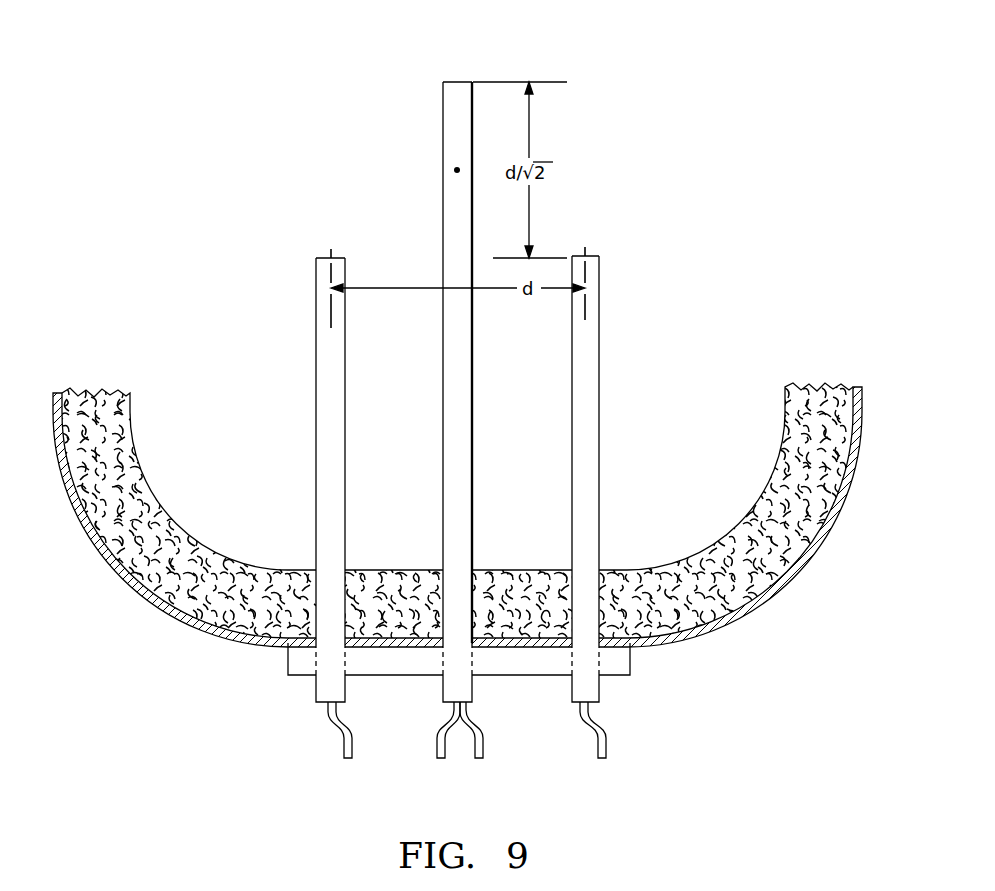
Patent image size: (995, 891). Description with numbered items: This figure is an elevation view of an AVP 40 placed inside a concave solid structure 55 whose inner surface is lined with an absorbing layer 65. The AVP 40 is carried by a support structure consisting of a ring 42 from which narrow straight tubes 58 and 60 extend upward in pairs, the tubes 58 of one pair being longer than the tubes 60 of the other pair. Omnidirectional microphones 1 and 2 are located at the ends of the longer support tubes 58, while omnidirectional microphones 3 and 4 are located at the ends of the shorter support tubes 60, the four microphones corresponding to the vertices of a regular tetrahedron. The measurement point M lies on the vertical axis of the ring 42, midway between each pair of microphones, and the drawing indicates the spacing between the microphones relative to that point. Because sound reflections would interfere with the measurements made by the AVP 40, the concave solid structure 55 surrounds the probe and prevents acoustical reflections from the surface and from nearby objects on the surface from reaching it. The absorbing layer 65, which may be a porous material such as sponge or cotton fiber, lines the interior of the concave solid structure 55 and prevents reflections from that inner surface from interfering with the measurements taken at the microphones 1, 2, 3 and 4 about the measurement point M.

The omnidirectional microphone 1 is at (452, 372).
The omnidirectional microphone 2 is at (452, 372).
The omnidirectional microphone 3 is at (324, 257).
The omnidirectional microphone 4 is at (590, 256).
The AVP 40 is at (476, 400).
The ring 42 is at (297, 676).
The concave solid structure 55 is at (127, 585).
The support tubes 58 is at (452, 387).
The support tubes 60 is at (454, 458).
The absorbing layer 65 is at (123, 442).
The measurement point M is at (456, 169).